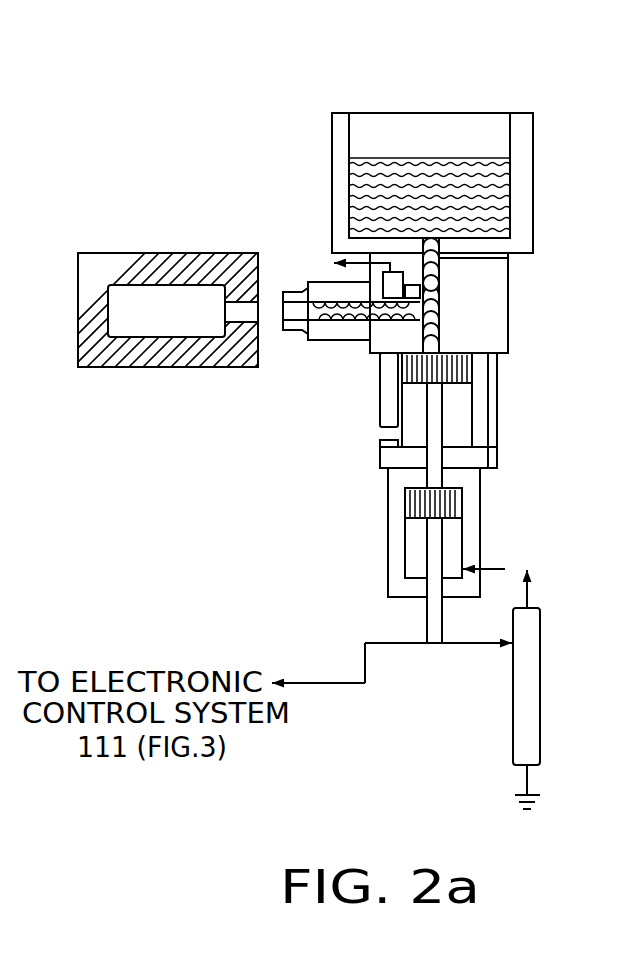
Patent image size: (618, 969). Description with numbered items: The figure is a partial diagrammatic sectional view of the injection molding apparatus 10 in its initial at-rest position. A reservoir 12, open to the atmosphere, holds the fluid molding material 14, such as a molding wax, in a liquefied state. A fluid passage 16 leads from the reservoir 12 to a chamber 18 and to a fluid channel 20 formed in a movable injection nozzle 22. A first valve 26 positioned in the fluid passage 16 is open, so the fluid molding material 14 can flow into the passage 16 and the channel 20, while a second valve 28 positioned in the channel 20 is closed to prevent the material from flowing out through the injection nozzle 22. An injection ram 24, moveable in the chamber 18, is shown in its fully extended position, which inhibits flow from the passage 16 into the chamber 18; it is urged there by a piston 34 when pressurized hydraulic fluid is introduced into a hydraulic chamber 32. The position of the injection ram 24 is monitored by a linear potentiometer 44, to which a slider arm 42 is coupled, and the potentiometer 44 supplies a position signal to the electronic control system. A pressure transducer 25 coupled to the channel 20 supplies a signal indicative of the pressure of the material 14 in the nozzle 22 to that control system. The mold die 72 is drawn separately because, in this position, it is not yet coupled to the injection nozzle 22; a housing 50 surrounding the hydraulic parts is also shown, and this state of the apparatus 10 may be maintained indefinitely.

The injection molding apparatus 10 is at (553, 183).
The reservoir 12 is at (332, 128).
The fluid molding material 14 is at (327, 158).
The fluid passage 16 is at (497, 376).
The chamber 18 is at (455, 421).
The fluid channel 20 is at (390, 321).
The injection nozzle 22 is at (313, 266).
The injection ram 24 is at (473, 364).
The pressure transducer 25 is at (440, 306).
The first valve 26 is at (447, 277).
The second valve 28 is at (308, 338).
The hydraulic chamber 32 is at (453, 541).
The piston 34 is at (403, 500).
The slider arm 42 is at (472, 645).
The linear potentiometer 44 is at (510, 703).
The motor housing 50 is at (393, 578).
The mold die 72 is at (130, 252).